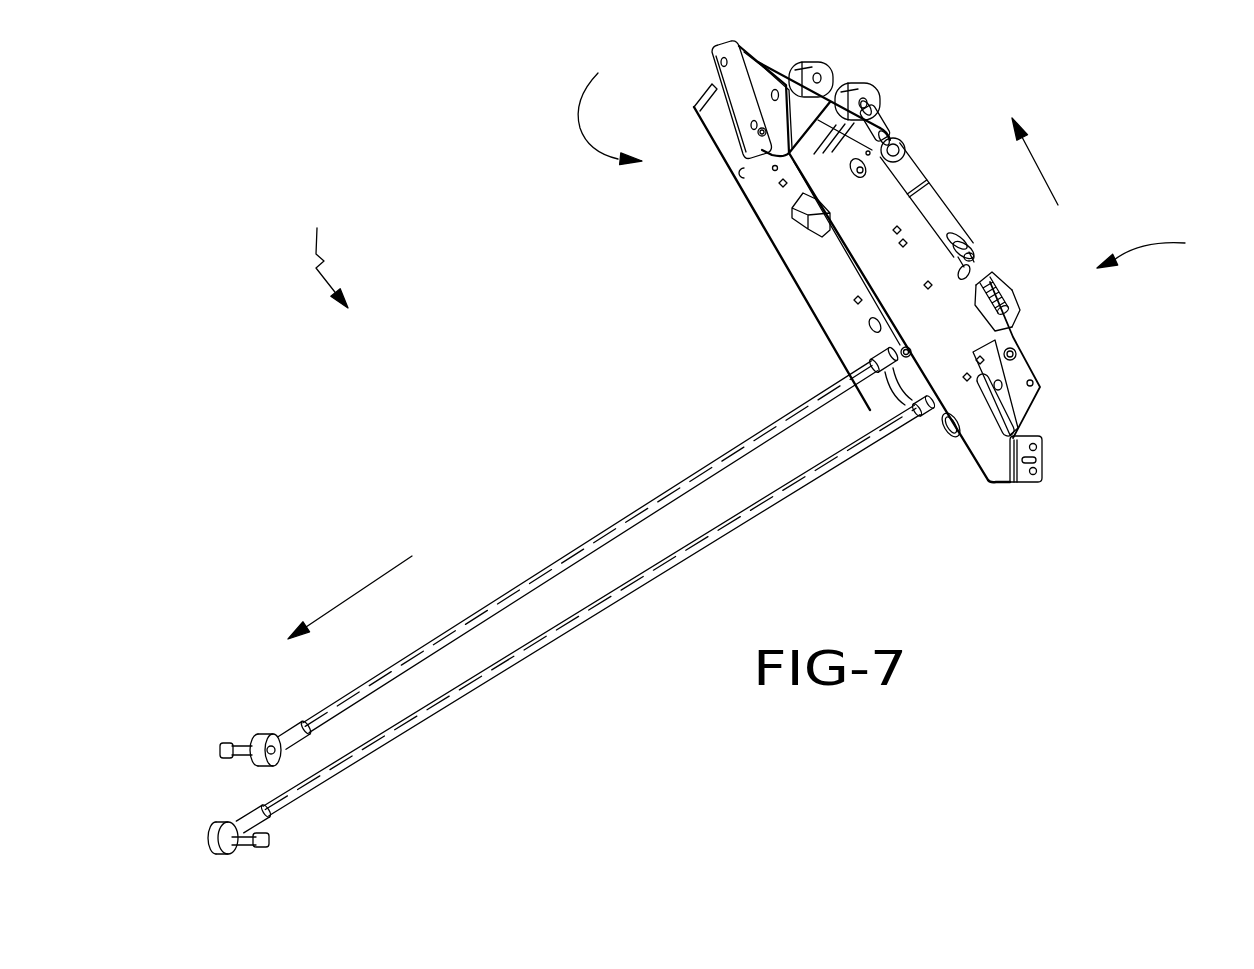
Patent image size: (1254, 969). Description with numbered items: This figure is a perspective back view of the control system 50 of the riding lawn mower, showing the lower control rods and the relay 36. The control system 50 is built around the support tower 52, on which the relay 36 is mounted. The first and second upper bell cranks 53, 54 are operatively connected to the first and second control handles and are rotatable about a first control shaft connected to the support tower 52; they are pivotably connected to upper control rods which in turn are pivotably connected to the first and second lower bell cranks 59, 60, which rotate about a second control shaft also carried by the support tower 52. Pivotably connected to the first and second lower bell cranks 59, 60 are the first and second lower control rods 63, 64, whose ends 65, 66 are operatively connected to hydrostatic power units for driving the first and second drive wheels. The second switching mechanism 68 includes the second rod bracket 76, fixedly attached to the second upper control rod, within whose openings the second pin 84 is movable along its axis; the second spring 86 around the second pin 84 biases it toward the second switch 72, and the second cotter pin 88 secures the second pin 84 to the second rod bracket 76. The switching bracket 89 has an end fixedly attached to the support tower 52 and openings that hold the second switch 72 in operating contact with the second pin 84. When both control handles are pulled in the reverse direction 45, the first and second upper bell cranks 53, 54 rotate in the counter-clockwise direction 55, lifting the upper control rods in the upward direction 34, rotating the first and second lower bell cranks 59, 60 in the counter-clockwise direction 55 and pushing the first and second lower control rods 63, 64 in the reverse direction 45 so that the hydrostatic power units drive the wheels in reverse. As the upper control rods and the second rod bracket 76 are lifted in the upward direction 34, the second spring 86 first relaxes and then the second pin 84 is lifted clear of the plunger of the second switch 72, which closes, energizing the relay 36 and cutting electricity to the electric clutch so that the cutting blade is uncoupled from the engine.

The upward direction 34 is at (1040, 163).
The relay 36 is at (808, 226).
The reverse direction 45 is at (352, 598).
The control system 50 is at (325, 254).
The support tower 52 is at (738, 175).
The first upper bell crank 53 is at (713, 72).
The second upper bell crank 54 is at (781, 78).
The counter-clockwise direction 55 is at (582, 132).
The first lower bell crank 59 is at (902, 397).
The second lower bell crank 60 is at (952, 434).
The first lower control rod 63 is at (518, 594).
The second lower control rod 64 is at (557, 637).
The end of first lower control rod 65 is at (301, 727).
The end of second lower control rod 66 is at (282, 808).
The second switching mechanism 68 is at (1160, 249).
The second switch 72 is at (1013, 322).
The second rod bracket 76 is at (988, 262).
The second pin 84 is at (968, 253).
The second spring 86 is at (990, 290).
The second cotter pin 88 is at (977, 262).
The switching bracket 89 is at (1017, 295).